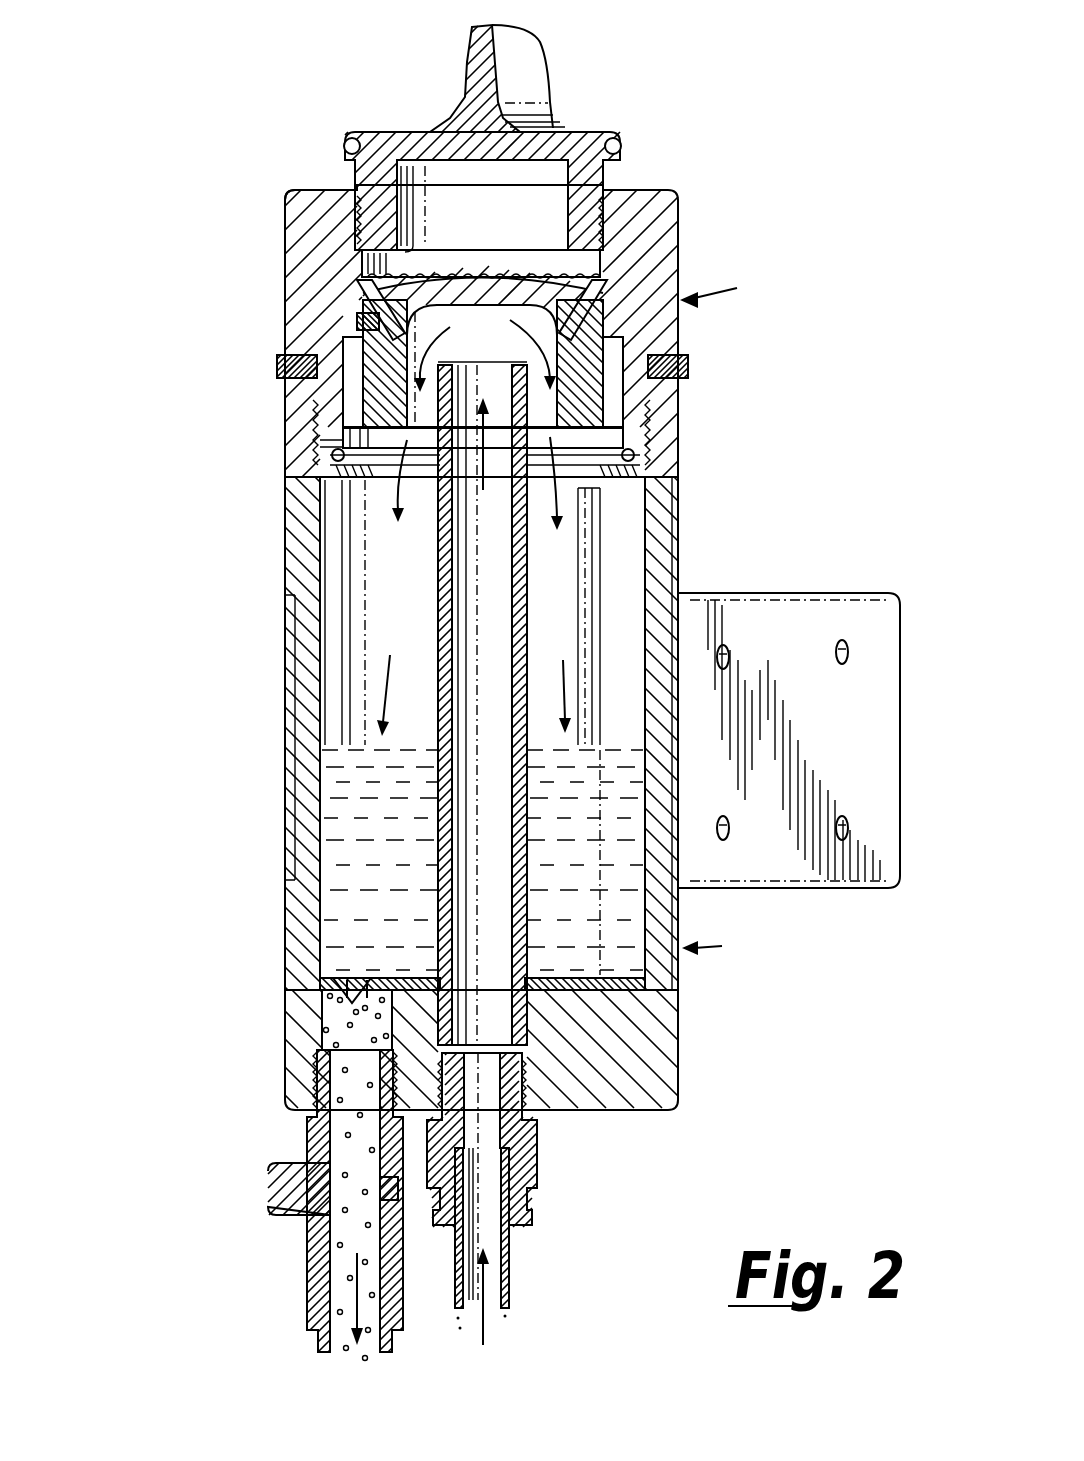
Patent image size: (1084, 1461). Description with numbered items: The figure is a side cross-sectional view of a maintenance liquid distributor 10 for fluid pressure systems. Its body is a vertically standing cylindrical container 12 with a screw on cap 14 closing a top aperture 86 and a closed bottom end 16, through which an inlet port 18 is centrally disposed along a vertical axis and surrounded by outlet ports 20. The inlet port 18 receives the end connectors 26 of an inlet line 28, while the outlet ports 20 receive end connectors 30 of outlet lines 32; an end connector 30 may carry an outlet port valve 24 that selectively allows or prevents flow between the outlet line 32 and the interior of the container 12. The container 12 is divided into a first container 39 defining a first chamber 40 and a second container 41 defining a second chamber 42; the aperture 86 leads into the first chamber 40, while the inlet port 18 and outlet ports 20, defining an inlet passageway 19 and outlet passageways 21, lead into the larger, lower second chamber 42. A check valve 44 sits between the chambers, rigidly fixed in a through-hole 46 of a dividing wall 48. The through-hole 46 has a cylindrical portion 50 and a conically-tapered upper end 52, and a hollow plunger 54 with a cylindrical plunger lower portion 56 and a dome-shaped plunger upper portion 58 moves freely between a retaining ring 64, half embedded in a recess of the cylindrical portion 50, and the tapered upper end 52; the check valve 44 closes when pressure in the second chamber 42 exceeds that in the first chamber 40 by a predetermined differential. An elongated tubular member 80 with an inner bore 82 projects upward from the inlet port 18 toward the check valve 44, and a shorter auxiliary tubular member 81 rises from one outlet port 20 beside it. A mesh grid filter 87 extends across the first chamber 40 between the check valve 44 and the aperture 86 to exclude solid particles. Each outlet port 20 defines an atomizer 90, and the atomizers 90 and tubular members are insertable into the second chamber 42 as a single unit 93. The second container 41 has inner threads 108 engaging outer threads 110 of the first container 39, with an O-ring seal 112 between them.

The liquid distributor 10 is at (98, 66).
The cylindrical container 12 is at (275, 546).
The screw on cap 14 is at (603, 138).
The closed bottom end 16 is at (597, 1113).
The inlet port 18 is at (512, 1123).
The inlet passageway 19 is at (505, 1018).
The outlet ports 20 is at (325, 1046).
The outlet passageways 21 is at (318, 1017).
The outlet port valve 24 is at (310, 1182).
The end connectors 26 is at (543, 1196).
The inlet line 28 is at (507, 1267).
The end connectors 30 is at (305, 1238).
The outlet lines 32 is at (305, 1344).
The first container 39 is at (640, 273).
The first chamber 40 is at (645, 346).
The second container 41 is at (728, 947).
The second chamber 42 is at (637, 548).
The check valve 44 is at (287, 398).
The through-hole 46 is at (345, 340).
The dividing wall 48 is at (360, 320).
The cylindrical portion 50 is at (655, 406).
The conically-tapered upper end 52 is at (680, 214).
The plunger 54 is at (355, 285).
The plunger lower portion 56 is at (618, 202).
The plunger upper portion 58 is at (400, 282).
The retaining ring 64 is at (660, 460).
The elongated tubular member 80 is at (440, 655).
The auxiliary tubular member 81 is at (590, 608).
The inner bore 82 is at (458, 586).
The top aperture 86 is at (385, 246).
The mesh grid filter 87 is at (737, 288).
The atomizer 90 is at (873, 606).
The single unit 93 is at (630, 990).
The inner threads 108 is at (320, 444).
The outer threads 110 is at (316, 456).
The O-ring seal 112 is at (690, 362).